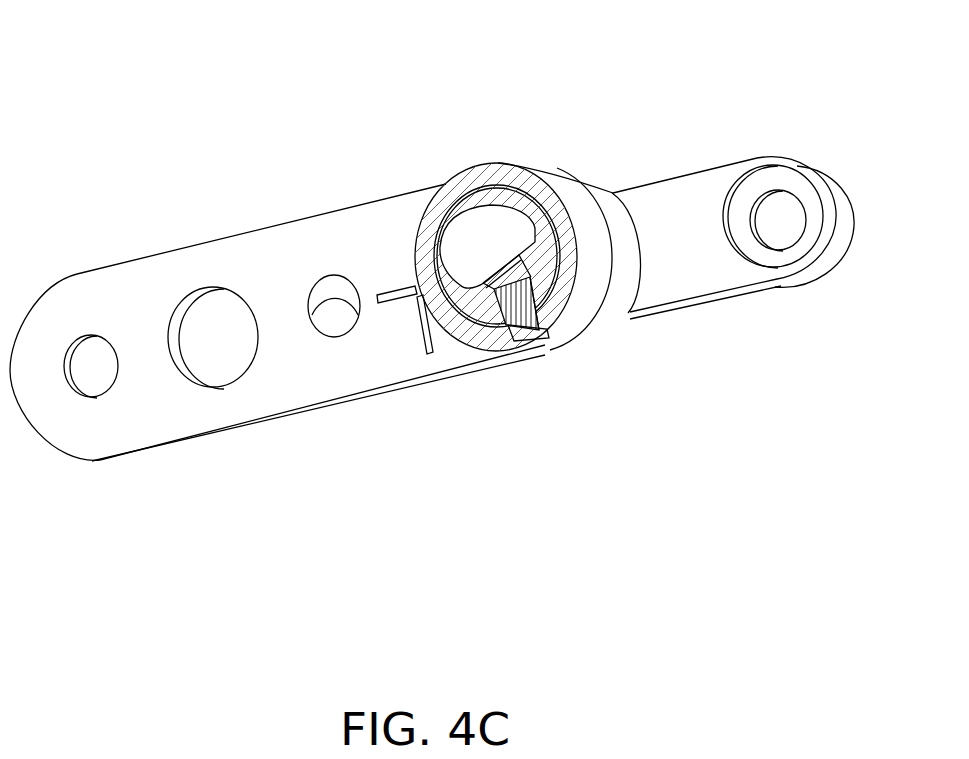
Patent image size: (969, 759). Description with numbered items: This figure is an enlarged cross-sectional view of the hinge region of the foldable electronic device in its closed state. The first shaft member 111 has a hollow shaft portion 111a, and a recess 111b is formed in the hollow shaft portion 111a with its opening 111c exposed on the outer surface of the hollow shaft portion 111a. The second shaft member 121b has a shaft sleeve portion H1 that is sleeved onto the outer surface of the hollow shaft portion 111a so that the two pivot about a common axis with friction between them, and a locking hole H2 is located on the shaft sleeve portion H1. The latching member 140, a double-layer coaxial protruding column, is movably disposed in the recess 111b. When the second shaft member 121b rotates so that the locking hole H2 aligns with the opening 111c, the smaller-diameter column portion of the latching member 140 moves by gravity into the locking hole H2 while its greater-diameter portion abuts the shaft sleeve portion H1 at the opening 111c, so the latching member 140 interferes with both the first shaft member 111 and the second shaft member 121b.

The second shaft member 121b is at (255, 233).
The shaft sleeve portion H1 is at (457, 187).
The hollow shaft portion 111a is at (498, 195).
The first shaft member 111 is at (683, 177).
The locking hole H2 is at (539, 333).
The opening of the recess 111c is at (543, 296).
The recess 111b is at (492, 288).
The latching member 140 is at (510, 310).